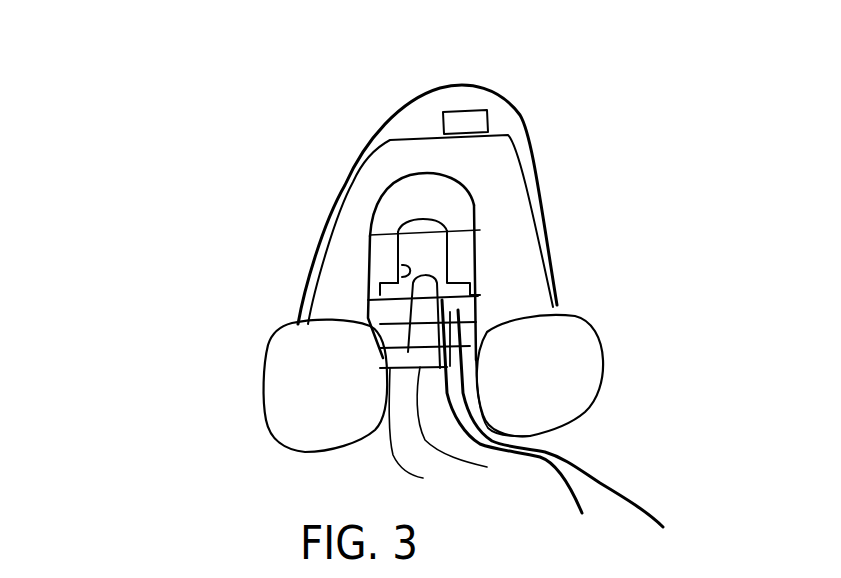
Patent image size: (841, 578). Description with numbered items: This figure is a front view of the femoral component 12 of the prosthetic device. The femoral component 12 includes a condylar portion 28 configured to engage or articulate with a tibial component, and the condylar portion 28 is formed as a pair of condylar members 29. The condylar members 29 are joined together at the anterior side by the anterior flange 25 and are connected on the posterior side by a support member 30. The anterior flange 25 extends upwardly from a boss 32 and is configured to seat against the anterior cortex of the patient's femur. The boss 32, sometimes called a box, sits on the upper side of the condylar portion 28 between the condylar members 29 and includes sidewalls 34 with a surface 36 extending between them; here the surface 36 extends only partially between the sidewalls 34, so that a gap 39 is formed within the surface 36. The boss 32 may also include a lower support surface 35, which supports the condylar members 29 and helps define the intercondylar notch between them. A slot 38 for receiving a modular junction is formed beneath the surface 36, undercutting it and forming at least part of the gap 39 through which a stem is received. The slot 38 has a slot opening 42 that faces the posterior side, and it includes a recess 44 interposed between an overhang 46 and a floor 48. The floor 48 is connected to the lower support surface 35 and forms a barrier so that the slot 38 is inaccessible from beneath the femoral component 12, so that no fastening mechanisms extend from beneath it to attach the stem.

The femoral component 12 is at (580, 86).
The anterior flange 25 is at (380, 166).
The condylar portion 28 is at (560, 311).
The condylar members 29 is at (273, 412).
The support member 30 is at (473, 429).
The boss 32 is at (482, 263).
The sidewalls 34 is at (479, 305).
The lower support surface 35 is at (578, 436).
The surface 36 is at (460, 243).
The slot 38 is at (432, 253).
The gap 39 is at (417, 220).
The slot opening 42 is at (426, 389).
The recess 44 is at (482, 291).
The overhang 46 is at (400, 293).
The floor 48 is at (292, 323).